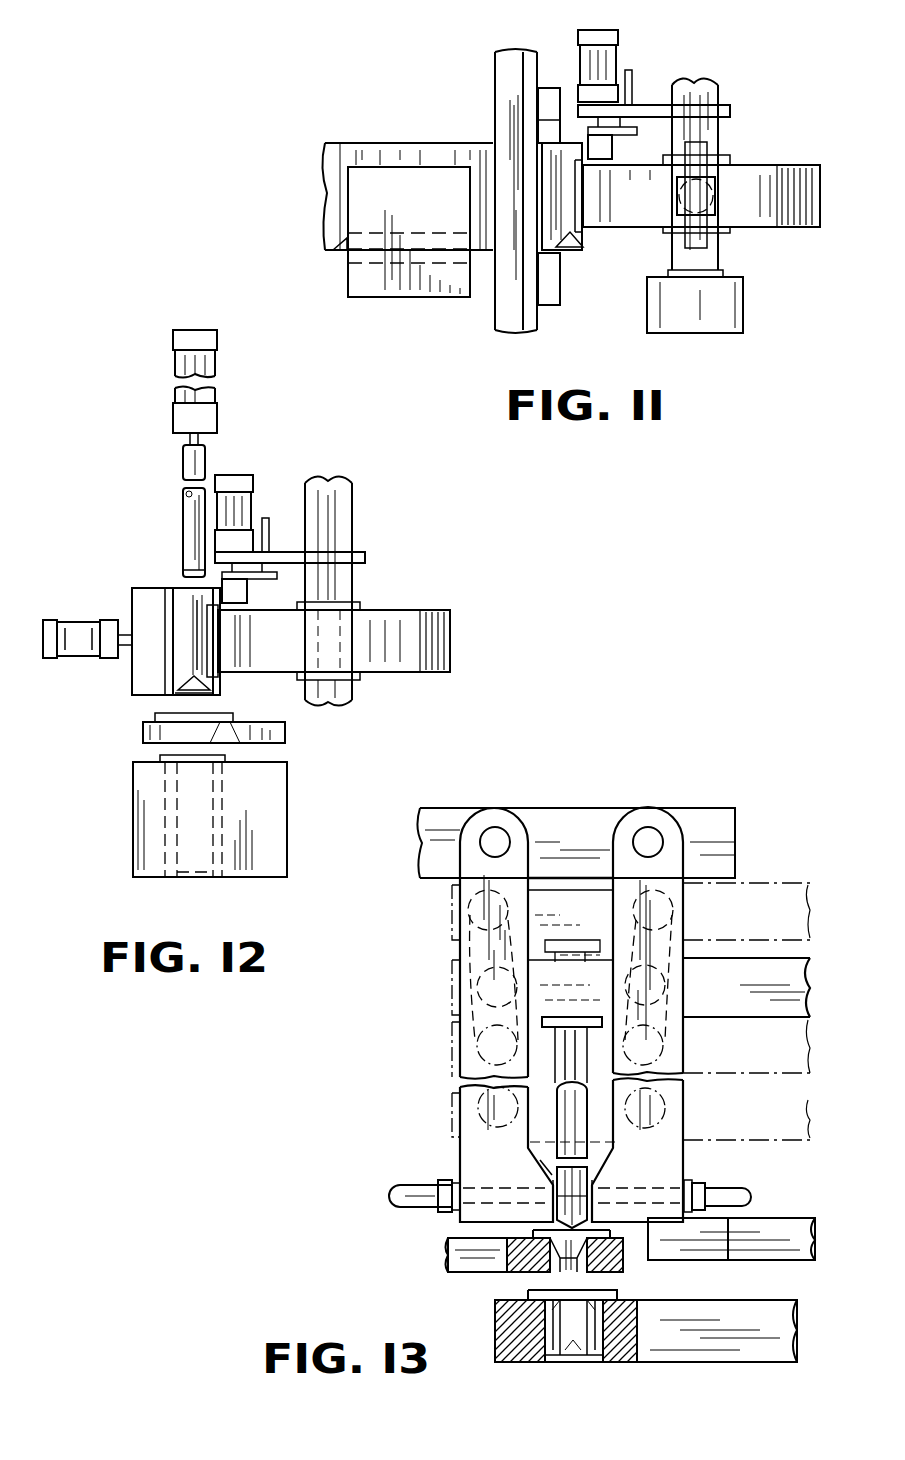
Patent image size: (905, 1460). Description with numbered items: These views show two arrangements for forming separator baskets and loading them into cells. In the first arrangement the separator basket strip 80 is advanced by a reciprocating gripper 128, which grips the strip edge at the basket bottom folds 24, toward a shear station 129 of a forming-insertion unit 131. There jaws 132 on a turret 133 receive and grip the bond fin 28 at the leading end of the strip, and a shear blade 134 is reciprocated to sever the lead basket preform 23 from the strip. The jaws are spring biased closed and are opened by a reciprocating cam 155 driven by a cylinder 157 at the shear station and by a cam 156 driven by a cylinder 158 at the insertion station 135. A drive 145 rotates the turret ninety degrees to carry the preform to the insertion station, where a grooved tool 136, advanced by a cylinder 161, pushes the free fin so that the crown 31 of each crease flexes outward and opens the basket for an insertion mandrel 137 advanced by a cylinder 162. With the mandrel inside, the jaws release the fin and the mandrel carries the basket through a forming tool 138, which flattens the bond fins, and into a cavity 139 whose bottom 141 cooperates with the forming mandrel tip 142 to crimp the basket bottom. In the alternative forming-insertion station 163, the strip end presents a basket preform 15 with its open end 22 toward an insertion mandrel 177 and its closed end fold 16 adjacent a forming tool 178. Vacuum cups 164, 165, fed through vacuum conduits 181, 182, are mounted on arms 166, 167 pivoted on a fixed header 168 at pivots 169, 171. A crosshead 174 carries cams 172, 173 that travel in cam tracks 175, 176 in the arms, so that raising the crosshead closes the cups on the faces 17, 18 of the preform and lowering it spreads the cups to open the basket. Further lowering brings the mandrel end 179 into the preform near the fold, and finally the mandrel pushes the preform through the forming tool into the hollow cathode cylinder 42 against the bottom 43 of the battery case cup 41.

In FIG. 11, the separator basket strip 80 is at (346, 139).
In FIG. 11, the gripper 128 is at (364, 268).
In FIG. 11, the basket bottom fold 24 is at (333, 250).
In FIG. 12, the basket bottom fold 24 is at (183, 694).
In FIG. 11, the shear station 129 is at (487, 138).
In FIG. 11, the shear blade 134 is at (550, 272).
In FIG. 11, the basket preform 23 is at (586, 230).
In FIG. 12, the basket preform 23 is at (183, 605).
In FIG. 11, the bond fin 28 is at (581, 246).
In FIG. 12, the bond fin 28 is at (217, 688).
In FIG. 11, the forming-insertion unit 131 is at (697, 209).
In FIG. 11, the jaws 132 is at (588, 182).
In FIG. 12, the jaws 132 is at (220, 656).
In FIG. 11, the turret 133 is at (772, 219).
In FIG. 12, the turret 133 is at (428, 611).
In FIG. 11, the grooved tool 136 is at (707, 144).
In FIG. 12, the grooved tool 136 is at (143, 660).
In FIG. 11, the cylinder 161 is at (717, 194).
In FIG. 12, the cylinder 161 is at (67, 631).
In FIG. 11, the drive 145 is at (741, 322).
In FIG. 11, the cylinder 157 is at (615, 50).
In FIG. 11, the reciprocating cam 155 is at (610, 159).
In FIG. 12, the cylinder 162 is at (183, 390).
In FIG. 12, the insertion mandrel 137 is at (188, 510).
In FIG. 12, the forming mandrel tip 142 is at (182, 574).
In FIG. 12, the cylinder 158 is at (247, 492).
In FIG. 12, the reciprocating cam 156 is at (242, 602).
In FIG. 12, the insertion station 135 is at (167, 631).
In FIG. 12, the crown 31 is at (198, 638).
In FIG. 12, the forming tool 138 is at (146, 738).
In FIG. 12, the cavity 139 is at (178, 810).
In FIG. 12, the cavity bottom 141 is at (184, 841).
In FIG. 13, the forming-insertion station 163 is at (600, 1081).
In FIG. 13, the fixed header 168 is at (572, 810).
In FIG. 13, the pivot 169 is at (492, 826).
In FIG. 13, the pivot 171 is at (650, 826).
In FIG. 13, the insertion mandrel 177 is at (562, 1047).
In FIG. 13, the open end of basket 22 is at (585, 1155).
In FIG. 13, the cam track 175 is at (474, 930).
In FIG. 13, the cam 172 is at (480, 983).
In FIG. 13, the cam track 176 is at (665, 930).
In FIG. 13, the cam 173 is at (660, 984).
In FIG. 13, the crosshead 174 is at (792, 970).
In FIG. 13, the arm 167 is at (687, 1082).
In FIG. 13, the arm 166 is at (458, 1050).
In FIG. 13, the basket preform 15 is at (575, 1180).
In FIG. 13, the vacuum cup 164 is at (552, 1184).
In FIG. 13, the vacuum cup 165 is at (595, 1184).
In FIG. 13, the basket face 17 is at (560, 1197).
In FIG. 13, the basket face 18 is at (586, 1196).
In FIG. 13, the mandrel end 179 is at (546, 1166).
In FIG. 13, the vacuum conduit 181 is at (395, 1190).
In FIG. 13, the vacuum conduit 182 is at (738, 1194).
In FIG. 13, the forming tool 178 is at (535, 1263).
In FIG. 13, the closed end fold 16 is at (576, 1266).
In FIG. 13, the battery case cup 41 is at (616, 1322).
In FIG. 13, the hollow cathode cylinder 42 is at (538, 1325).
In FIG. 13, the bottom 43 is at (553, 1358).